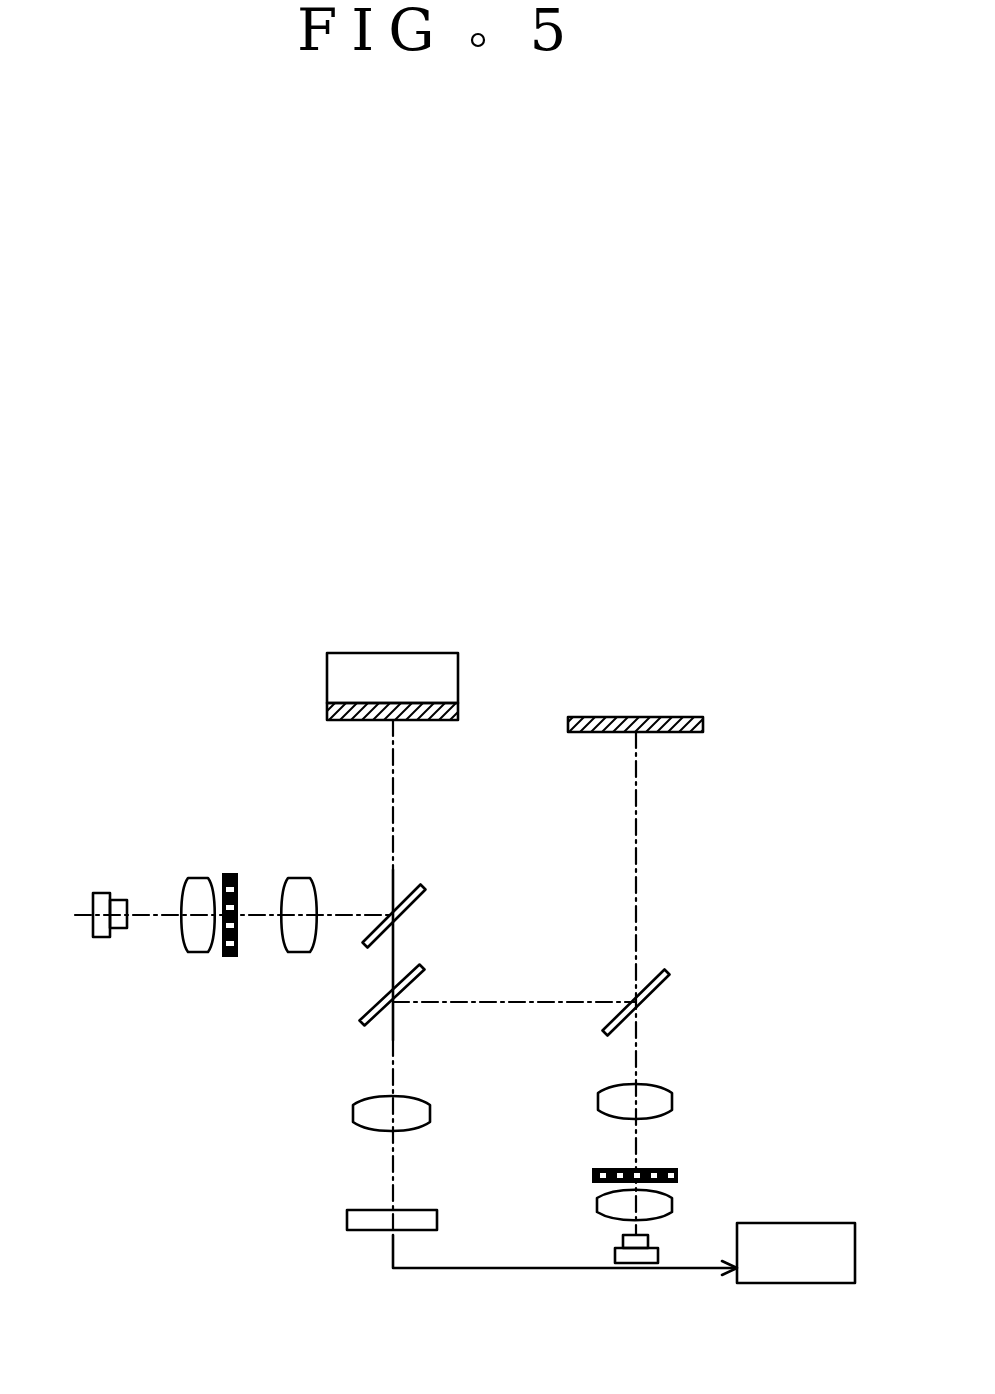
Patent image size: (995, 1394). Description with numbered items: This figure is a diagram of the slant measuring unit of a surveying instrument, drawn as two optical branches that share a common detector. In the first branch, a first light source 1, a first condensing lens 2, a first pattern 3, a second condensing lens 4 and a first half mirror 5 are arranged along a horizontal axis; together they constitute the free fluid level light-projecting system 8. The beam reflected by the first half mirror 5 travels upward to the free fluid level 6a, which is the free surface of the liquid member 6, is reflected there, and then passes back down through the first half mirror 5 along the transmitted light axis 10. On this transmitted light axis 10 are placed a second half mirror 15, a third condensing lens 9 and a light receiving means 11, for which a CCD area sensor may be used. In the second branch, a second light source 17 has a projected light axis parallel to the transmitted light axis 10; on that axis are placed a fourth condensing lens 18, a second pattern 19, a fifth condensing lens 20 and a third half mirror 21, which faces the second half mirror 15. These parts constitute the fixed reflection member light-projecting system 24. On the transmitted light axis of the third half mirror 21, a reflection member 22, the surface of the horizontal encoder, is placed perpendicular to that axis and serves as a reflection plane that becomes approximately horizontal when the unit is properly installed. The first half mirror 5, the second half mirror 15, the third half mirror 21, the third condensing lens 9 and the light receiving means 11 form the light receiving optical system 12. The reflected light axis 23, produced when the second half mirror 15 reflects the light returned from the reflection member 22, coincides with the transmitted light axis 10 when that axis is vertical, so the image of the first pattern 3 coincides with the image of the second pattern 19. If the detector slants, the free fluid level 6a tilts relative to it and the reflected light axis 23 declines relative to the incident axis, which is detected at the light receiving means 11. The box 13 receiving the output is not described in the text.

The first light source 1 is at (100, 892).
The first condensing lens 2 is at (202, 878).
The first pattern 3 is at (232, 873).
The second condensing lens 4 is at (304, 878).
The first half mirror 5 is at (423, 887).
The liquid member 6 is at (458, 710).
The free fluid level 6a is at (338, 700).
The free fluid level light-projecting system 8 is at (260, 962).
The third condensing lens 9 is at (353, 1120).
The transmitted light axis 10 is at (387, 963).
The light receiving means 11 is at (347, 1217).
The light receiving optical system 12 is at (275, 1113).
The signal processing circuit 13 is at (758, 1223).
The second half mirror 15 is at (423, 967).
The second light source 17 is at (615, 1255).
The fourth condensing lens 18 is at (597, 1205).
The second pattern 19 is at (595, 1168).
The fifth condensing lens 20 is at (675, 1093).
The third half mirror 21 is at (667, 972).
The reflection member 22 is at (680, 732).
The reflected light axis 23 is at (398, 1040).
The fixed reflection member light-projecting system 24 is at (725, 1170).